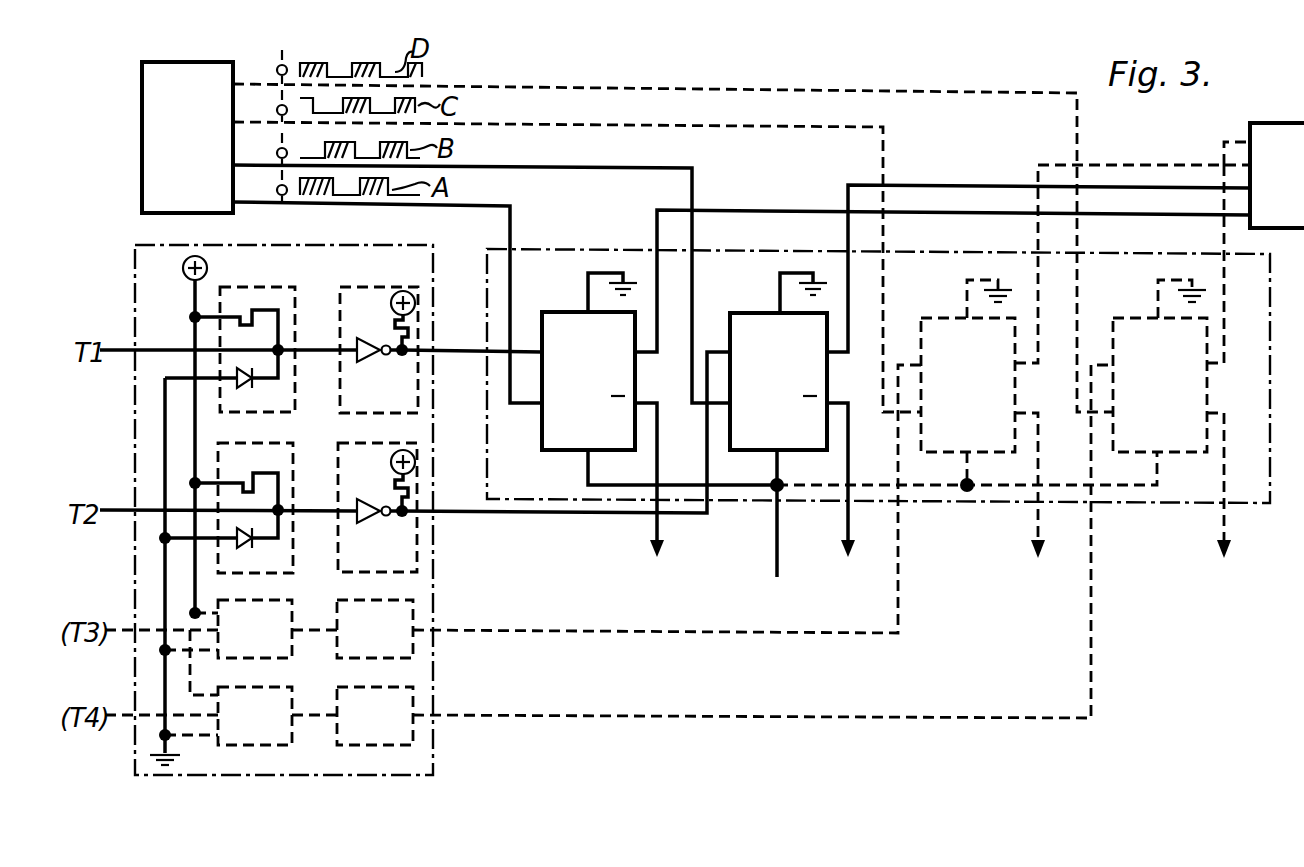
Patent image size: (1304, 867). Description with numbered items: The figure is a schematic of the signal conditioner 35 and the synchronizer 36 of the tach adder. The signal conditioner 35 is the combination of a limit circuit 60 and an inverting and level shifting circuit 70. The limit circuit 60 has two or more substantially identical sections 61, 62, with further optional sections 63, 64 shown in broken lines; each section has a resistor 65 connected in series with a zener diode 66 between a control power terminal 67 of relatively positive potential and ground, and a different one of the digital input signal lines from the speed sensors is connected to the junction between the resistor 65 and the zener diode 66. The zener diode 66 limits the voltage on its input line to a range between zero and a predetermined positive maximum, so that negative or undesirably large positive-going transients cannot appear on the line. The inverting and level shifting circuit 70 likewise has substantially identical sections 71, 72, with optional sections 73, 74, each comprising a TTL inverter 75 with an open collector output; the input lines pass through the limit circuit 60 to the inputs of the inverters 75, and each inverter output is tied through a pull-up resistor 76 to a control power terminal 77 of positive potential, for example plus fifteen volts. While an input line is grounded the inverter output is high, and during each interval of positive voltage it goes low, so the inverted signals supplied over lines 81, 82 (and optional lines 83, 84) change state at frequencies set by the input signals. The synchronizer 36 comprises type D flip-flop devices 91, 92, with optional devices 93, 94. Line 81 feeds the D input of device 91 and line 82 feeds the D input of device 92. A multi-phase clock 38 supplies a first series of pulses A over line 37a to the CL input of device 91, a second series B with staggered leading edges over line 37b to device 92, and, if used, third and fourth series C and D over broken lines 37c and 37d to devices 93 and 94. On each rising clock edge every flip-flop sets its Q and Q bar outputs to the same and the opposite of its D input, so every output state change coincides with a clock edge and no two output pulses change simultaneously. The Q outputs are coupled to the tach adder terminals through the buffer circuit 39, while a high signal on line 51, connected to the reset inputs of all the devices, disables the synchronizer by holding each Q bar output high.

The signal conditioner 35 is at (135, 293).
The synchronizer 36 is at (1270, 490).
The line 37a is at (512, 218).
The line 37b is at (694, 185).
The broken line 37c is at (885, 157).
The broken line 37d is at (1079, 143).
The clock 38 is at (198, 197).
The buffer circuit 39 is at (1289, 190).
The line 51 is at (776, 563).
The limit circuit 60 is at (269, 283).
The section 61 is at (296, 406).
The section 62 is at (294, 552).
The third switch unit 63 is at (268, 645).
The fourth switch unit 64 is at (268, 732).
The resistor 65 is at (264, 312).
The zener diode 66 is at (246, 389).
The control power terminal 67 is at (183, 277).
The inverting and level shifting circuit 70 is at (392, 283).
The section 71 is at (340, 415).
The section 72 is at (338, 575).
The third inverter unit 73 is at (388, 645).
The fourth inverter unit 74 is at (388, 732).
The inverter 75 is at (370, 362).
The pull-up resistor 76 is at (394, 330).
The control power terminal 77 is at (392, 305).
The line 81 is at (478, 350).
The line 82 is at (478, 511).
The third signal line 83 is at (492, 632).
The fourth signal line 84 is at (492, 716).
The flip-flop device 91 is at (603, 397).
The flip-flop device 92 is at (791, 397).
The flip-flop device 93 is at (978, 403).
The flip-flop device 94 is at (1166, 403).